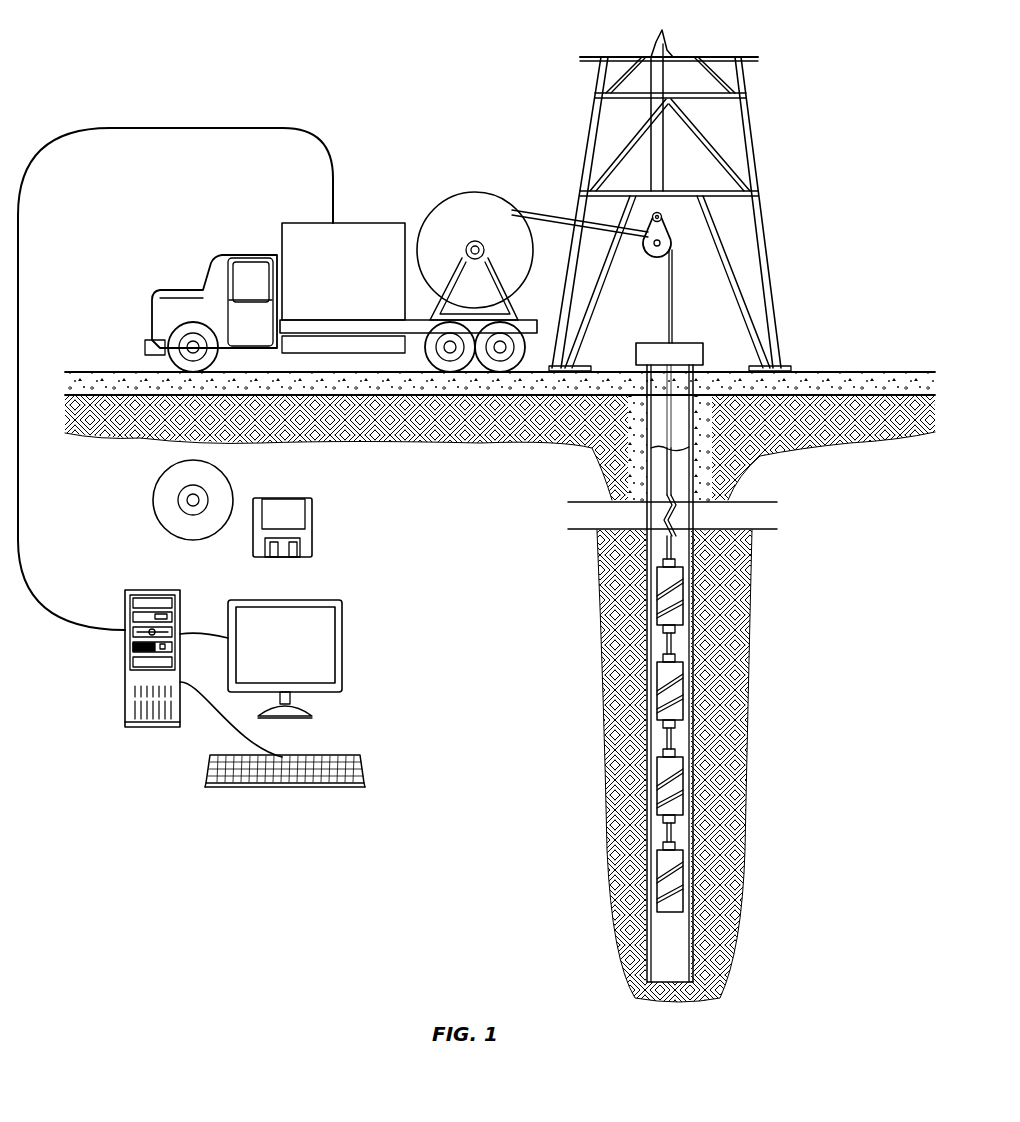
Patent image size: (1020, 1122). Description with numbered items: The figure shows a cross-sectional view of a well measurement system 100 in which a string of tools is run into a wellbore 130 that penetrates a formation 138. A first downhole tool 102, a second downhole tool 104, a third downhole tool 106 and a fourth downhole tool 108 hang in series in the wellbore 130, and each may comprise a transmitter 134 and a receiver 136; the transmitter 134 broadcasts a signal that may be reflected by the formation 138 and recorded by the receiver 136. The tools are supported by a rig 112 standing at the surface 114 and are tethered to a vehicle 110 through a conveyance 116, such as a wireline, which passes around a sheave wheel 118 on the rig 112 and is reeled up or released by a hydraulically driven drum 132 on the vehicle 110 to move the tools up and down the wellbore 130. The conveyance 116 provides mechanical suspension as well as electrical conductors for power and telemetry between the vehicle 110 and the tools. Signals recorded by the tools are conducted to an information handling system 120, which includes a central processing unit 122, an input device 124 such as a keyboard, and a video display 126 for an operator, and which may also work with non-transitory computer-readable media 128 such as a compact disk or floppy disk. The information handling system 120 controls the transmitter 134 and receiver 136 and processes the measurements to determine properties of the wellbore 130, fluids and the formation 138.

The well measurement system 100 is at (146, 50).
The first downhole tool 102 is at (657, 882).
The second downhole tool 104 is at (683, 787).
The third downhole tool 106 is at (657, 690).
The fourth downhole tool 108 is at (683, 598).
The vehicle 110 is at (353, 223).
The rig 112 is at (762, 207).
The surface 114 is at (827, 372).
The conveyance 116 is at (665, 545).
The sheave wheel 118 is at (656, 259).
The information handling system 120 is at (143, 816).
The central processing unit 122 is at (152, 590).
The input device 124 is at (364, 768).
The video display 126 is at (290, 600).
The non-transitory computer-readable media 128 is at (213, 465).
The wellbore 130 is at (770, 481).
The drum 132 is at (480, 193).
The transmitter 134 is at (657, 588).
The receiver 136 is at (657, 610).
The formation 138 is at (861, 608).